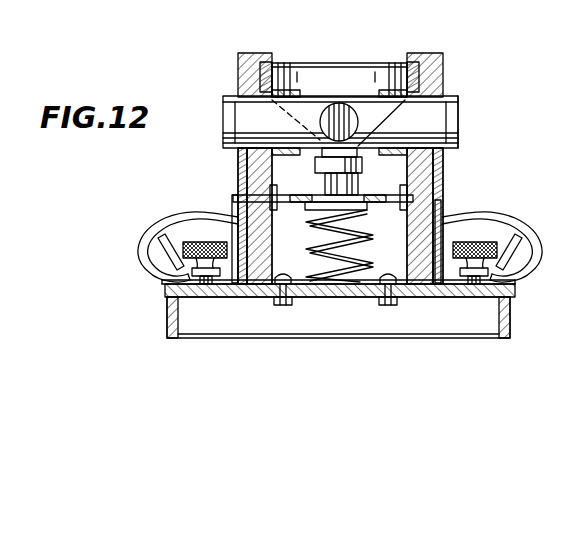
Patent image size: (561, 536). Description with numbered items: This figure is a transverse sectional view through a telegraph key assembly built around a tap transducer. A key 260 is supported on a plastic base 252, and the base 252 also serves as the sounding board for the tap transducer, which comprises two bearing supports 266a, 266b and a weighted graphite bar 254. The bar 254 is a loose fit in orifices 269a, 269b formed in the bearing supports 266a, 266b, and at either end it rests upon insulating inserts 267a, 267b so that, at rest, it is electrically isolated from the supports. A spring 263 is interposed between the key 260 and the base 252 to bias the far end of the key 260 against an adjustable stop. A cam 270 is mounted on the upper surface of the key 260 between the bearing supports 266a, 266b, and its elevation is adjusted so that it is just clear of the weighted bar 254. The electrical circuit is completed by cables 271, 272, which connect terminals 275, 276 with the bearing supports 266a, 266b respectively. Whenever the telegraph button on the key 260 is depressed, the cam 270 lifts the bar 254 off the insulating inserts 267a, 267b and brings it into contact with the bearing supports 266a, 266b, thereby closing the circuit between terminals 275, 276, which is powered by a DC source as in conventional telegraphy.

The plastic base 252 is at (165, 298).
The weighted graphite bar 254 is at (334, 112).
The key 260 is at (383, 197).
The spring 263 is at (309, 253).
The bearing support 266a is at (256, 56).
The bearing support 266b is at (426, 54).
The insulating insert 267a is at (238, 153).
The insulating insert 267b is at (444, 153).
The orifice 269a is at (241, 95).
The orifice 269b is at (446, 97).
The cam 270 is at (318, 166).
The cable 271 is at (143, 247).
The cable 272 is at (546, 247).
The terminal 275 is at (183, 242).
The terminal 276 is at (478, 242).